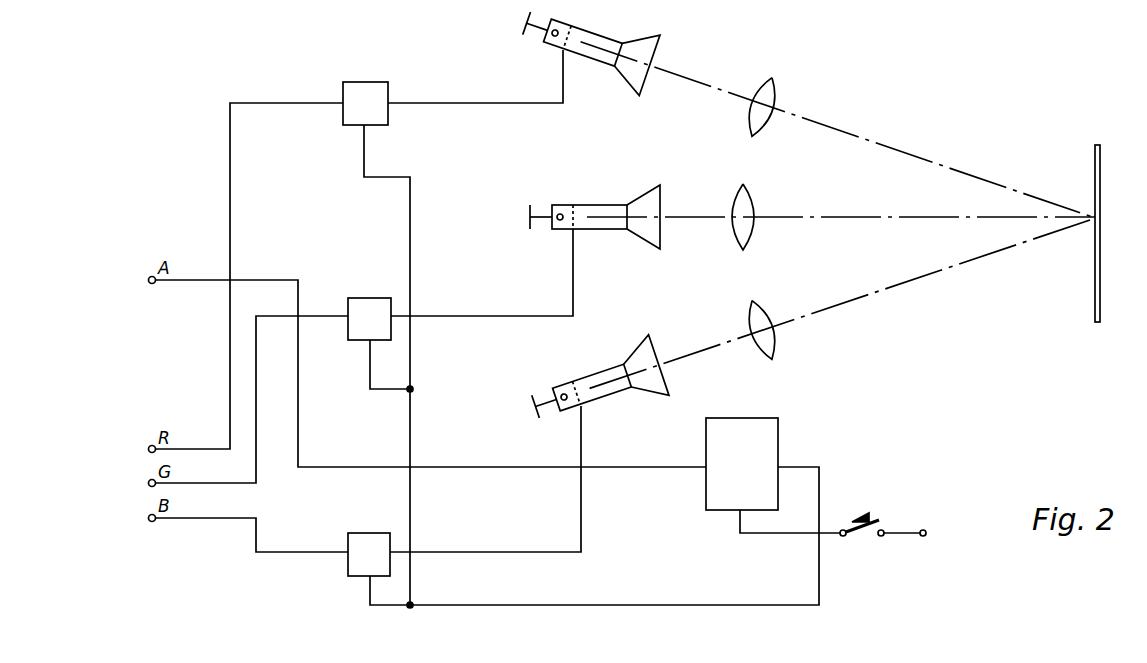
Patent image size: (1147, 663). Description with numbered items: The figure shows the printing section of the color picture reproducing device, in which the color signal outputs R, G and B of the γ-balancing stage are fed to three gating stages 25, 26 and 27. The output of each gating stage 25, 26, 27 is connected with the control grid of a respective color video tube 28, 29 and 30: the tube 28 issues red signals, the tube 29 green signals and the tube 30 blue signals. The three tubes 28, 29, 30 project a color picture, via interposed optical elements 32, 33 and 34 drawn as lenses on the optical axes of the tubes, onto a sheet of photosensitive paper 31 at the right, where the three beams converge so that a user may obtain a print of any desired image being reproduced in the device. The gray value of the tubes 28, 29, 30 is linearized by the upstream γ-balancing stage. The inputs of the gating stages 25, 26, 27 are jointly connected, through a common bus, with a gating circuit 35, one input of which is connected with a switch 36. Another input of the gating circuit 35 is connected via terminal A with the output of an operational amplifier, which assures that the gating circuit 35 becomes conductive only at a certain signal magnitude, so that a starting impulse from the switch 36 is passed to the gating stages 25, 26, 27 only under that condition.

The gating stage 25 is at (378, 90).
The gating stage 26 is at (370, 306).
The gating stage 27 is at (373, 540).
The color video tube 28 is at (592, 40).
The color video tube 29 is at (603, 210).
The color video tube 30 is at (608, 376).
The photosensitive paper 31 is at (1100, 190).
The optical element 32 is at (768, 88).
The optical element 33 is at (742, 205).
The optical element 34 is at (760, 318).
The gating circuit 35 is at (767, 428).
The switch 36 is at (880, 526).